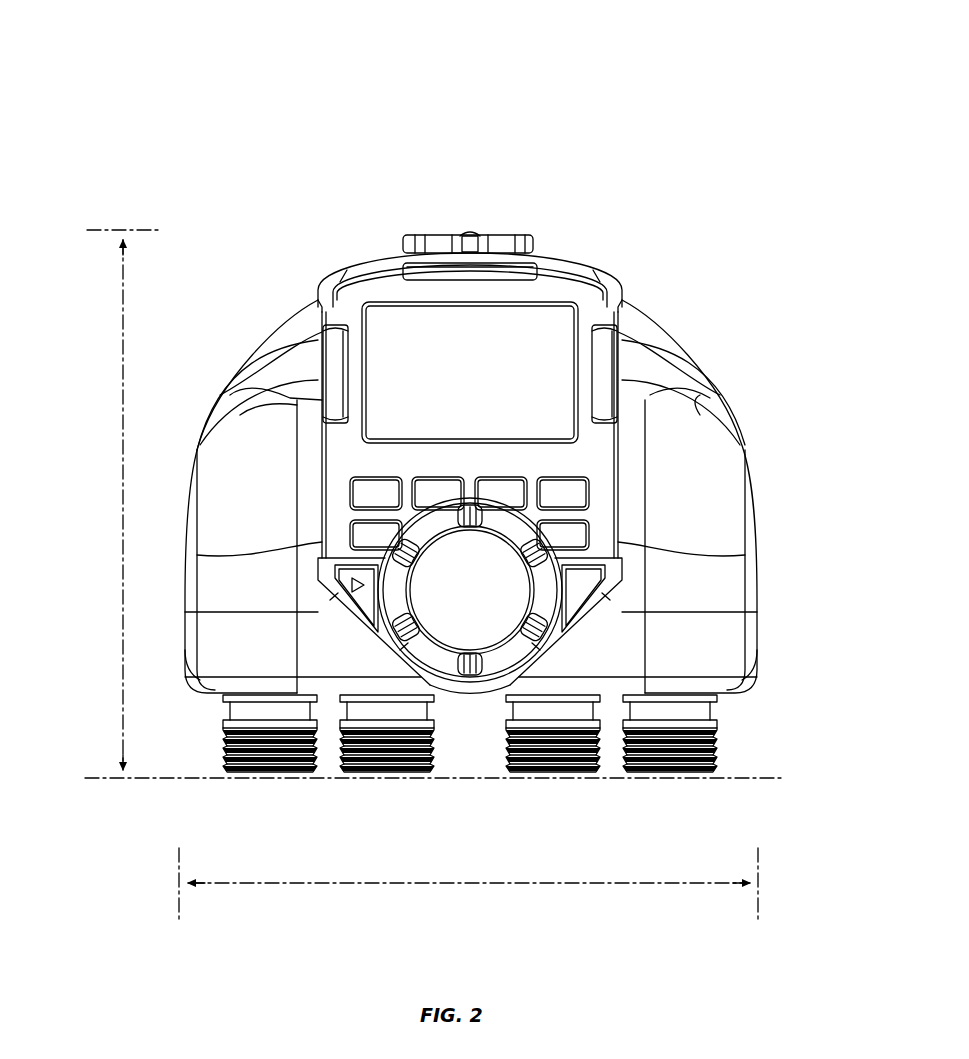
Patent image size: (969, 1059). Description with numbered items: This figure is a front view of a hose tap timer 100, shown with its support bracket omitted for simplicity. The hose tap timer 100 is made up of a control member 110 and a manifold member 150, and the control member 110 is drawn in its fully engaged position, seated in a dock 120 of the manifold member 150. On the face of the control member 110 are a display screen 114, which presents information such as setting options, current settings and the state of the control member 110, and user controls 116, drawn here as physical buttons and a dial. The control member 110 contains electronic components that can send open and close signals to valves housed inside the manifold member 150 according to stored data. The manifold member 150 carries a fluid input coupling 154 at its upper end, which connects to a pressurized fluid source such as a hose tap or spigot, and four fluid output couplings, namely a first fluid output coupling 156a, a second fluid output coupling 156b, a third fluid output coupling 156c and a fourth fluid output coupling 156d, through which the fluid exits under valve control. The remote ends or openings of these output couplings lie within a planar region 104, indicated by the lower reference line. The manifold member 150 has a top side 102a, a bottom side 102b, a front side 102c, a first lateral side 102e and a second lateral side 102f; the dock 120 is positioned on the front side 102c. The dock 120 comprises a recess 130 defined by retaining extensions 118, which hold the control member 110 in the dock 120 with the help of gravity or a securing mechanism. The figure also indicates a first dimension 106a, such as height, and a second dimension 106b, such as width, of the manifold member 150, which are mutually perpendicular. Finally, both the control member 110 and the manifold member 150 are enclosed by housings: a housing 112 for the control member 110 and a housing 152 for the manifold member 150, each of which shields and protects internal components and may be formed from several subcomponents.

The hose tap timer 100 is at (233, 88).
The top side 102a is at (320, 330).
The bottom side 102b is at (738, 700).
The front side 102c is at (245, 575).
The first lateral side 102e is at (745, 456).
The second lateral side 102f is at (188, 660).
The planar region 104 is at (735, 780).
The first dimension 106a is at (122, 279).
The second dimension 106b is at (312, 883).
The control member 110 is at (376, 294).
The housing 112 is at (322, 408).
The display screen 114 is at (428, 360).
The user controls 116 is at (455, 590).
The retaining extensions 118 is at (578, 592).
The dock 120 is at (724, 333).
The recess 130 is at (620, 540).
The manifold member 150 is at (733, 415).
The housing 152 is at (645, 330).
The fluid input coupling 154 is at (498, 235).
The first fluid output coupling 156a is at (285, 745).
The second fluid output coupling 156b is at (665, 758).
The third fluid output coupling 156c is at (403, 752).
The fourth fluid output coupling 156d is at (558, 750).